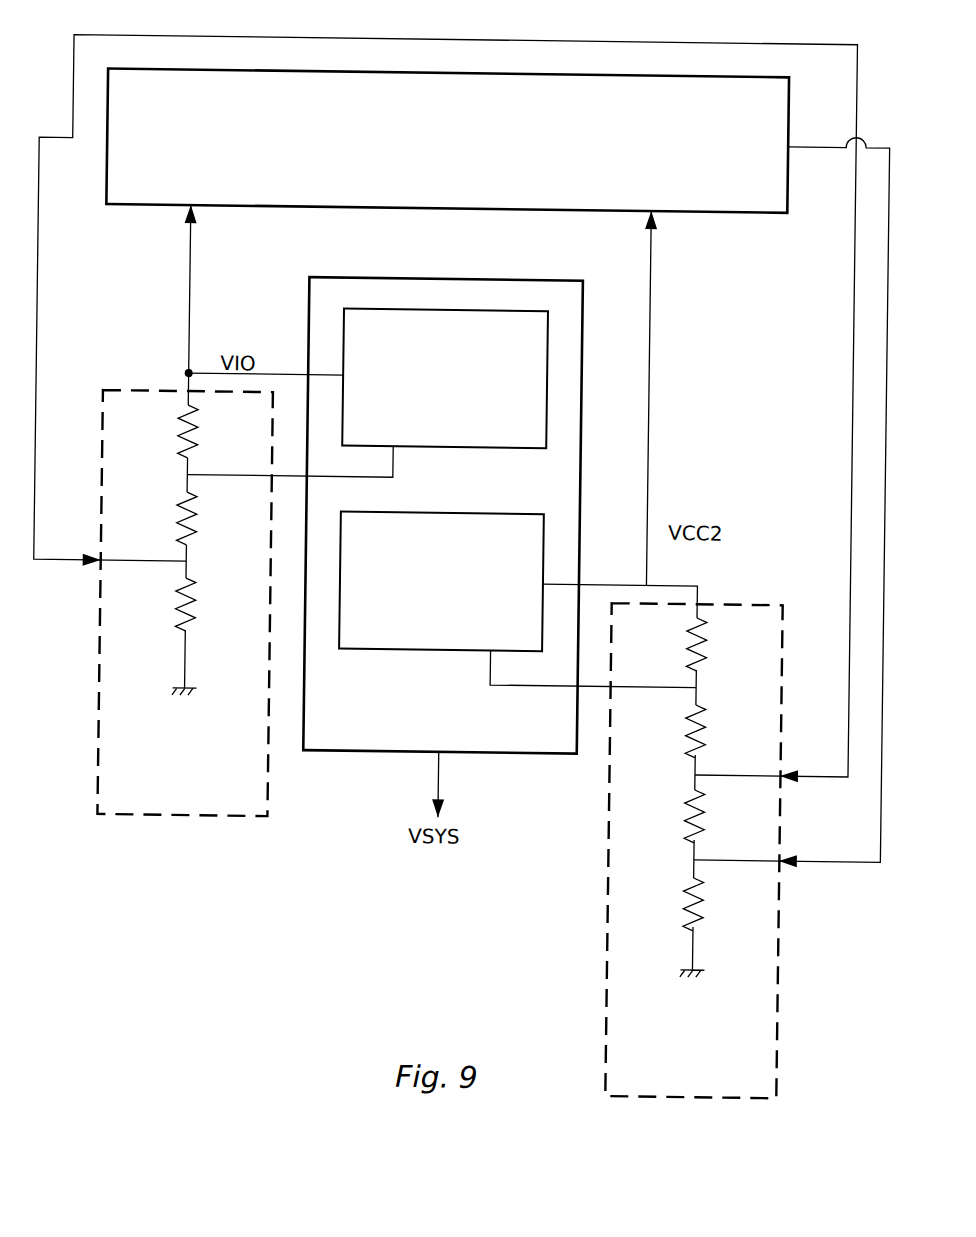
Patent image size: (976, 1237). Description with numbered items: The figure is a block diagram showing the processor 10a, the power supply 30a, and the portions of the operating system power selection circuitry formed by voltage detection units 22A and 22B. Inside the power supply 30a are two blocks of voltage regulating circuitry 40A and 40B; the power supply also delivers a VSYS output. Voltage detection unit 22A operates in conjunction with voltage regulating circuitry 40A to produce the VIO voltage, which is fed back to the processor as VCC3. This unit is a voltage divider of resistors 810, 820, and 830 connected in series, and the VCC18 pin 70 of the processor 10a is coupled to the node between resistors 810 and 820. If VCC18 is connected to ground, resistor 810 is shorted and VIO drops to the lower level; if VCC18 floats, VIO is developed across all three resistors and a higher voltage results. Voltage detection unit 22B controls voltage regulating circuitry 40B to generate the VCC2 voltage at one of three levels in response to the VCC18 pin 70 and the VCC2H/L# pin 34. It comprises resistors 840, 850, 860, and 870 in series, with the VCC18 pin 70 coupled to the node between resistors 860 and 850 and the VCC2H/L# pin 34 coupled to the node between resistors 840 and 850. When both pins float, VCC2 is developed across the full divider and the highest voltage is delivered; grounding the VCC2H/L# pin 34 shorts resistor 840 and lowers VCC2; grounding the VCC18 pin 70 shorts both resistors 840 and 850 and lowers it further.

The processor 10a is at (447, 141).
The power supply 30a is at (443, 515).
The voltage regulating circuitry 40A is at (445, 379).
The voltage regulating circuitry 40B is at (441, 582).
The voltage detection unit 22A is at (184, 603).
The voltage detection unit 22B is at (693, 850).
The resistor 830 is at (169, 431).
The resistor 820 is at (167, 518).
The resistor 810 is at (167, 604).
The resistor 870 is at (677, 644).
The resistor 860 is at (676, 731).
The resistor 850 is at (675, 816).
The resistor 840 is at (674, 904).
The VCC18 pin 70 is at (33, 523).
The VCC2H/L# pin 34 is at (821, 859).